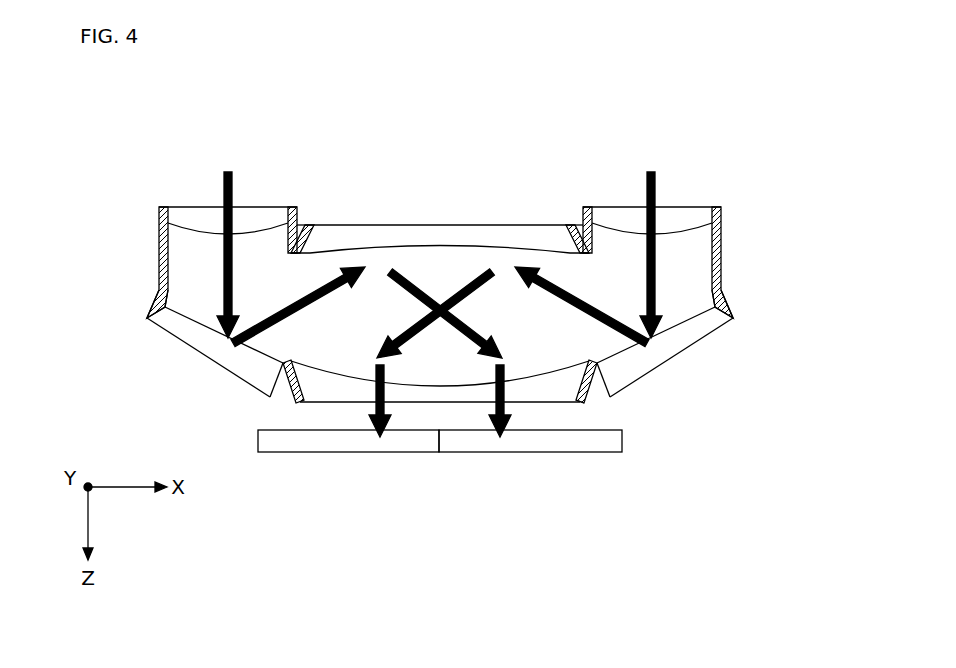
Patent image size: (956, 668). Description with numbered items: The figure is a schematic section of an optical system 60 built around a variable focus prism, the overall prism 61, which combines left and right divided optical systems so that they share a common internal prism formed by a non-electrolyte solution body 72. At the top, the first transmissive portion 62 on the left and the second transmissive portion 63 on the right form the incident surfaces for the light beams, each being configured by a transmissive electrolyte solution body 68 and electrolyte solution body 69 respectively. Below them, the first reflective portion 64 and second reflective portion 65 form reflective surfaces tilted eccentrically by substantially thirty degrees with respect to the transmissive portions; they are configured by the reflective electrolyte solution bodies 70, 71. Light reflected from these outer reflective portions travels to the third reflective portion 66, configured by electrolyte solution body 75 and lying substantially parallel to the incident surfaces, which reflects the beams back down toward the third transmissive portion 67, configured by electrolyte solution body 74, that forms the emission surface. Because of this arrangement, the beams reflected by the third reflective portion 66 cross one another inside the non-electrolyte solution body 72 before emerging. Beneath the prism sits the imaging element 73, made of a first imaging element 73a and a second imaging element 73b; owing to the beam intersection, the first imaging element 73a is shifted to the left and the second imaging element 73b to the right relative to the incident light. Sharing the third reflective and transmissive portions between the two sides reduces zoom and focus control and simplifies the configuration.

The optical system 60 is at (472, 104).
The overall prism 61 is at (737, 166).
The first transmissive portion 62 is at (156, 195).
The second transmissive portion 63 is at (733, 208).
The first reflective portion 64 is at (138, 301).
The second reflective portion 65 is at (738, 303).
The third reflective portion 66 is at (320, 195).
The third transmissive portion 67 is at (605, 404).
The electrolyte solution body 68 is at (197, 203).
The electrolyte solution body 69 is at (613, 205).
The electrolyte solution body 70 is at (178, 330).
The electrolyte solution body 71 is at (703, 332).
The non-electrolyte solution body 72 is at (502, 268).
The imaging element 73 is at (440, 490).
The first imaging element 73a is at (402, 453).
The second imaging element 73b is at (530, 470).
The electrolyte solution body 74 is at (323, 392).
The electrolyte solution body 75 is at (375, 232).